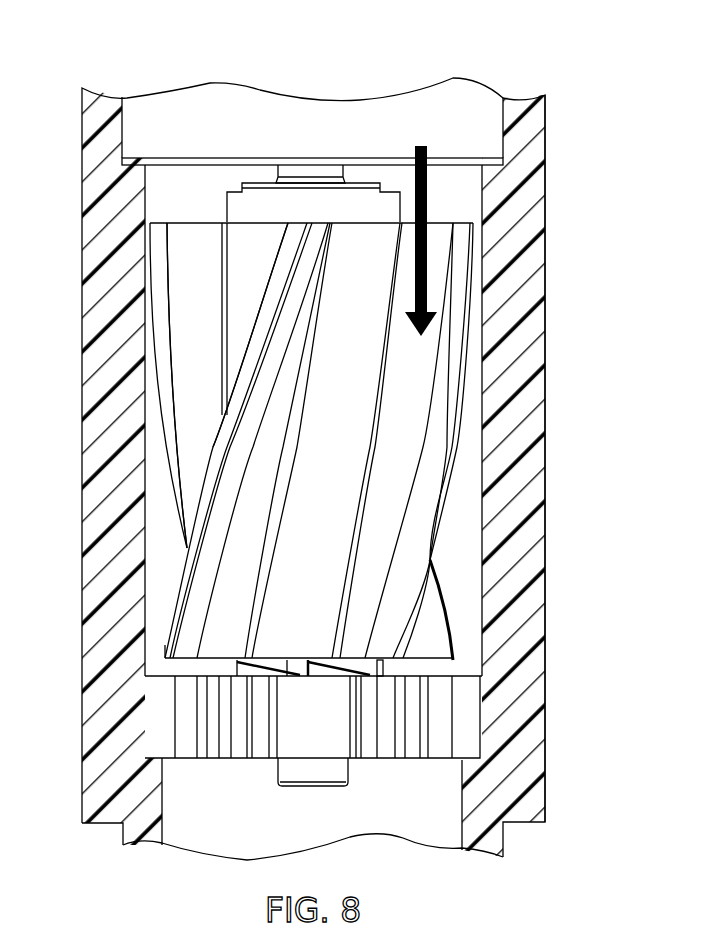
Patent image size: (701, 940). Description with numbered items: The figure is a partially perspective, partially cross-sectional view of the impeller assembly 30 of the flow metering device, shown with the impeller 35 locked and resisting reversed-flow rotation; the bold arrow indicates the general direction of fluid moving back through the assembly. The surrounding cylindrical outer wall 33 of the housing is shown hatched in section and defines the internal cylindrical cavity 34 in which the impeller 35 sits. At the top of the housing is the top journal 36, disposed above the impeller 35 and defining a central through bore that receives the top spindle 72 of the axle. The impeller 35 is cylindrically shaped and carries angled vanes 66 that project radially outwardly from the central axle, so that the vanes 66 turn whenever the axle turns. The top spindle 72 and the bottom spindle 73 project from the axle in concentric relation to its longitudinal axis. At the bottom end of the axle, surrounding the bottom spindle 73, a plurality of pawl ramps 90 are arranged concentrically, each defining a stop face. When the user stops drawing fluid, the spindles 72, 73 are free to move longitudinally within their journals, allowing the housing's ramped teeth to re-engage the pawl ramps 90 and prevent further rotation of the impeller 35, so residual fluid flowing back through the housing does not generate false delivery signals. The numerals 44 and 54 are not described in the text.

The impeller assembly 30 is at (140, 462).
The cylindrical outer wall 33 is at (547, 309).
The internal cylindrical cavity 34 is at (157, 572).
The impeller 35 is at (238, 326).
The top journal 36 is at (328, 162).
The housing 44 is at (562, 126).
The lower collar 54 is at (226, 780).
The angled vanes 66 is at (425, 621).
The top spindle 72 is at (295, 170).
The bottom spindle 73 is at (337, 773).
The pawl ramps 90 is at (380, 670).